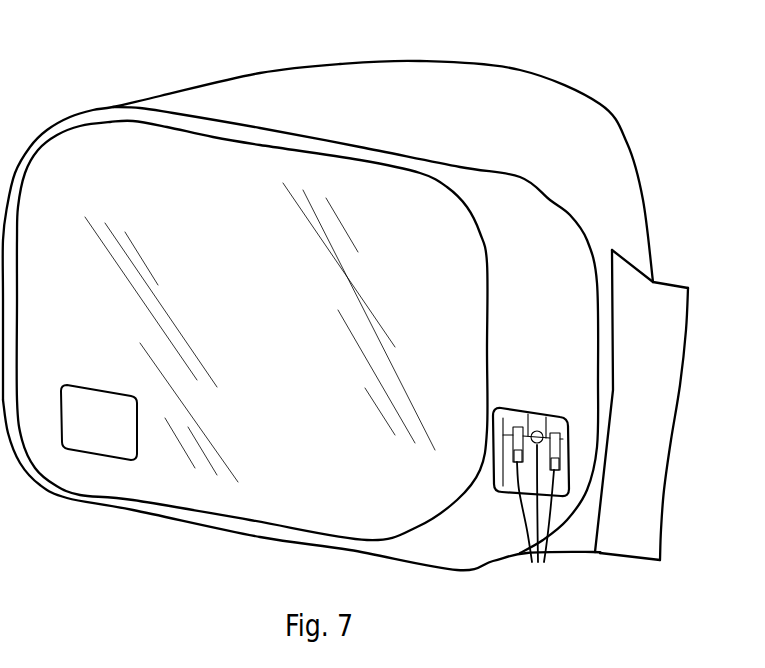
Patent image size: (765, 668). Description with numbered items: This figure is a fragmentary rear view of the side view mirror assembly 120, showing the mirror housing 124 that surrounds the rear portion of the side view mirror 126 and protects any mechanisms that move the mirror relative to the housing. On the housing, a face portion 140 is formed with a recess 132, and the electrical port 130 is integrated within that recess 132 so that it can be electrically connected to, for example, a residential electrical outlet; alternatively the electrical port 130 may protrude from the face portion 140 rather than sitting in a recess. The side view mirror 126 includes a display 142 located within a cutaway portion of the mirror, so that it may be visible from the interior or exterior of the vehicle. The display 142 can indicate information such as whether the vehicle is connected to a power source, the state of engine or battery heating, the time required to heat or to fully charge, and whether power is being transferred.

The side view mirror assembly 120 is at (559, 58).
The mirror housing 124 is at (612, 178).
The side view mirror 126 is at (487, 311).
The electrical port 130 is at (535, 520).
The recess 132 is at (520, 418).
The face portion 140 is at (468, 537).
The display 142 is at (100, 385).